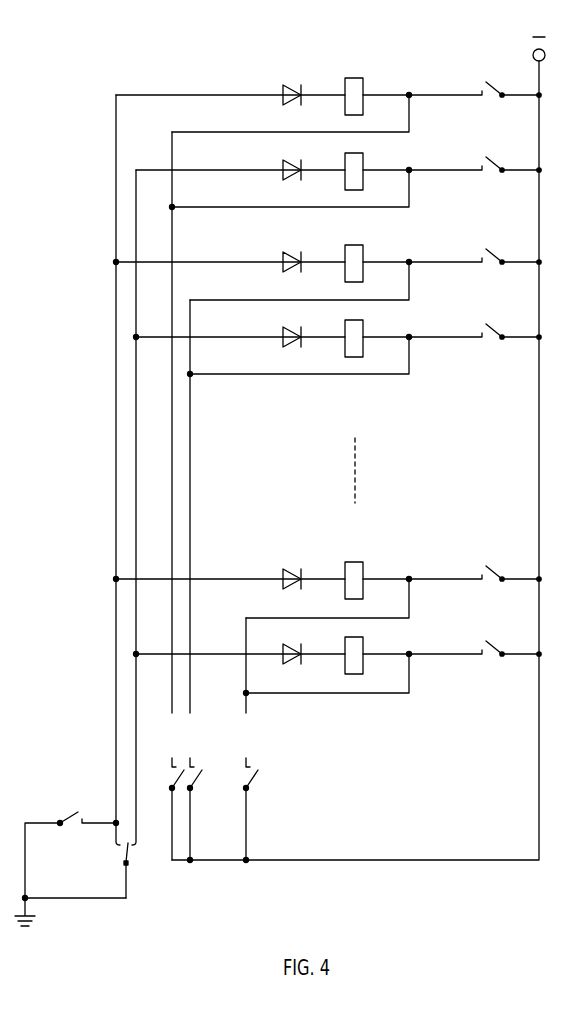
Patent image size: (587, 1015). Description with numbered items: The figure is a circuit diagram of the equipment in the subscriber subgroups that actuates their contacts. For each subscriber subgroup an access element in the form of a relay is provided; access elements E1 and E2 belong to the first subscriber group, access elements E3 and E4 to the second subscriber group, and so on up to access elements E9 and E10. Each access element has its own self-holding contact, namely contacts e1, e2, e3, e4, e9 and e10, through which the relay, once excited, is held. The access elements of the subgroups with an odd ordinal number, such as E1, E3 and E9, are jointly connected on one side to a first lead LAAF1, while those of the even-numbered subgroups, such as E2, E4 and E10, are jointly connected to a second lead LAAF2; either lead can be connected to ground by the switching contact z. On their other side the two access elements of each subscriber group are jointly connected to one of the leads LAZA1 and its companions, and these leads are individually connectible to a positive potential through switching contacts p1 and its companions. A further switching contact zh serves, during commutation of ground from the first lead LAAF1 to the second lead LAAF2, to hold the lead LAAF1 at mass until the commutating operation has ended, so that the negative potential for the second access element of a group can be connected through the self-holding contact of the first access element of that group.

The access element E1 is at (358, 86).
The access element E2 is at (358, 161).
The access element E3 is at (358, 253).
The access element E4 is at (358, 328).
The access element E9 is at (358, 570).
The access element E10 is at (358, 645).
The self-holding contact e1 is at (501, 62).
The self-holding contact e2 is at (501, 137).
The self-holding contact e3 is at (501, 229).
The self-holding contact e4 is at (501, 304).
The self-holding contact e9 is at (505, 546).
The self-holding contact e10 is at (515, 621).
The first lead LAAF1 is at (108, 470).
The second lead LAAF2 is at (145, 507).
The lead LAZA1 is at (252, 715).
The switching contact p1 is at (229, 782).
The switching contact zh is at (54, 816).
The switching contact z is at (122, 853).